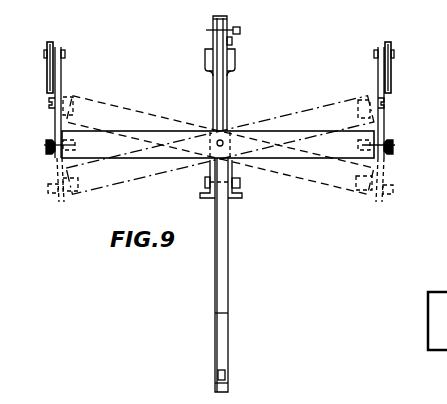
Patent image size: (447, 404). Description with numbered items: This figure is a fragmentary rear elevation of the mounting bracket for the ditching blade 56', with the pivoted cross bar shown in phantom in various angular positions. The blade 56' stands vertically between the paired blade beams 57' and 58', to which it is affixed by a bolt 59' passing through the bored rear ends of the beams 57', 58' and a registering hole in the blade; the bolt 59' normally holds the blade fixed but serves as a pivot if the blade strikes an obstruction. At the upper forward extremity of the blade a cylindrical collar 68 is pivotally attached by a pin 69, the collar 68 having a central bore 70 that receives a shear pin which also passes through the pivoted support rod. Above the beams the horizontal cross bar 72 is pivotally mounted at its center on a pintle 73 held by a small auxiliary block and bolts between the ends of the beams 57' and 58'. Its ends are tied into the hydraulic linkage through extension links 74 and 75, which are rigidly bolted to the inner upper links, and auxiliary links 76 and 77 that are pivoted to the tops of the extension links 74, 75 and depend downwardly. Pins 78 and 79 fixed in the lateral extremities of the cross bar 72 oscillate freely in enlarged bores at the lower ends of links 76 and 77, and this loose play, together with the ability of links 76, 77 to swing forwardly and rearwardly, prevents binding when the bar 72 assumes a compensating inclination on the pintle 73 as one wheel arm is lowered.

The blade 56' is at (238, 275).
The blade beam 57' is at (200, 189).
The blade beam 58' is at (246, 189).
The bolt 59' is at (242, 180).
The cylindrical collar 68 is at (213, 23).
The pin 69 is at (232, 40).
The bore 70 is at (243, 24).
The cross bar 72 is at (218, 144).
The pintle 73 is at (224, 140).
The extension link 74 is at (47, 76).
The extension link 75 is at (392, 74).
The auxiliary link 76 is at (49, 106).
The auxiliary link 77 is at (386, 104).
The pin 78 is at (46, 147).
The pin 79 is at (394, 147).